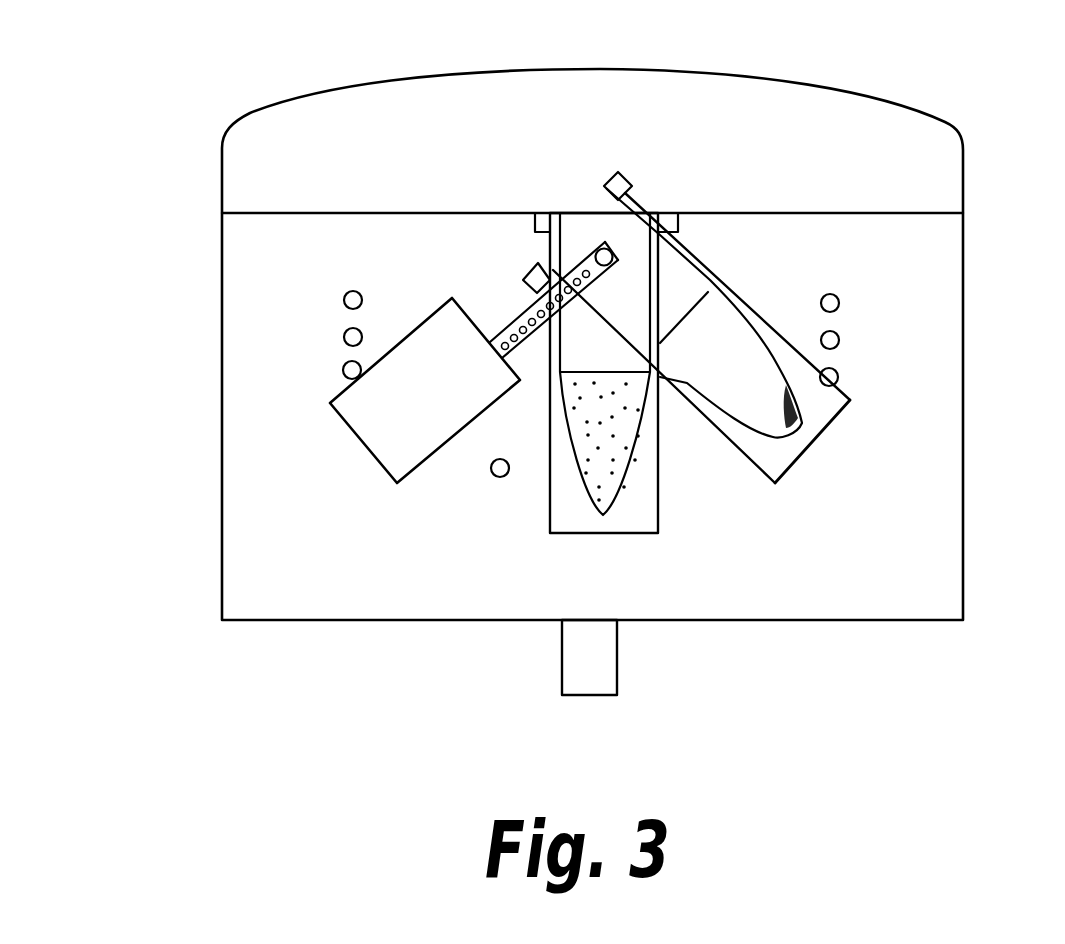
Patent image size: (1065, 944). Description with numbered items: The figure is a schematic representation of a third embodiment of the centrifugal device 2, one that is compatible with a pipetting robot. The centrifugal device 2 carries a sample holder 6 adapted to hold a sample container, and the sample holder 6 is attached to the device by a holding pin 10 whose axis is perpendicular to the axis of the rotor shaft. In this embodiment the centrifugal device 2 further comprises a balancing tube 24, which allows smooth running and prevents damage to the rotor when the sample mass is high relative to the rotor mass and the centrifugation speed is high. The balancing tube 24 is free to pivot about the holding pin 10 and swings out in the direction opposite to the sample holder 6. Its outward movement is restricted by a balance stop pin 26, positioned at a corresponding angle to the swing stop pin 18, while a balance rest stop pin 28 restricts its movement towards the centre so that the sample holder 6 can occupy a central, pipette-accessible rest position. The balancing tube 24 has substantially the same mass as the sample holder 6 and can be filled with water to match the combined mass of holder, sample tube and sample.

The centrifugal device 2 is at (243, 563).
The sample holder 6 is at (830, 407).
The holding pin 10 is at (598, 250).
The swing stop pin 18 is at (836, 377).
The balancing tube 24 is at (363, 420).
The balance stop pin 26 is at (346, 367).
The balance rest stop pin 28 is at (497, 478).